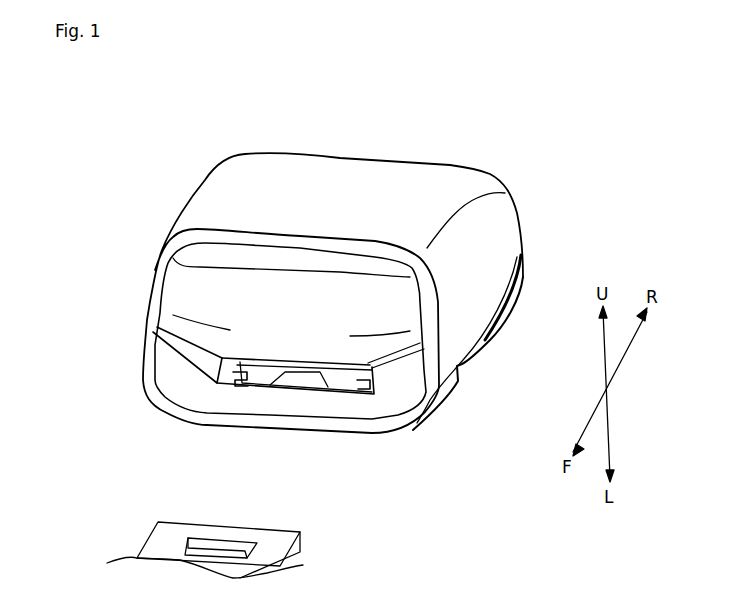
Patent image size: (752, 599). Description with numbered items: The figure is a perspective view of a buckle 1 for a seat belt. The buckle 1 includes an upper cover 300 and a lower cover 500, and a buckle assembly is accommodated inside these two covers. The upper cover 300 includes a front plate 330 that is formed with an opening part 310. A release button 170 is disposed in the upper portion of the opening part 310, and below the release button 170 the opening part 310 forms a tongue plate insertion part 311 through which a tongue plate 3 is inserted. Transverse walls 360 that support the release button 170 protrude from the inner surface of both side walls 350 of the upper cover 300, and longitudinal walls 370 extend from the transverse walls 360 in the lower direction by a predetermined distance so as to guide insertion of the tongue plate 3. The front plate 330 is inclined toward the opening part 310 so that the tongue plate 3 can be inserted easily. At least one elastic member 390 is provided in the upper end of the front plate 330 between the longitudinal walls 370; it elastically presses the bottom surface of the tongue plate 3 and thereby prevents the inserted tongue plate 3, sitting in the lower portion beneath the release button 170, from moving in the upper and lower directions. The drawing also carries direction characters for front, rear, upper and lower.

The buckle 1 is at (225, 138).
The upper cover 300 is at (352, 178).
The opening part 310 is at (177, 283).
The release button 170 is at (412, 296).
The side walls 350 is at (428, 325).
The lower cover 500 is at (467, 370).
The longitudinal walls 370 is at (210, 383).
The elastic member 390 is at (230, 395).
The front plate 330 is at (300, 404).
The tongue plate insertion part 311 is at (337, 371).
The transverse walls 360 is at (395, 362).
The tongue plate 3 is at (283, 553).